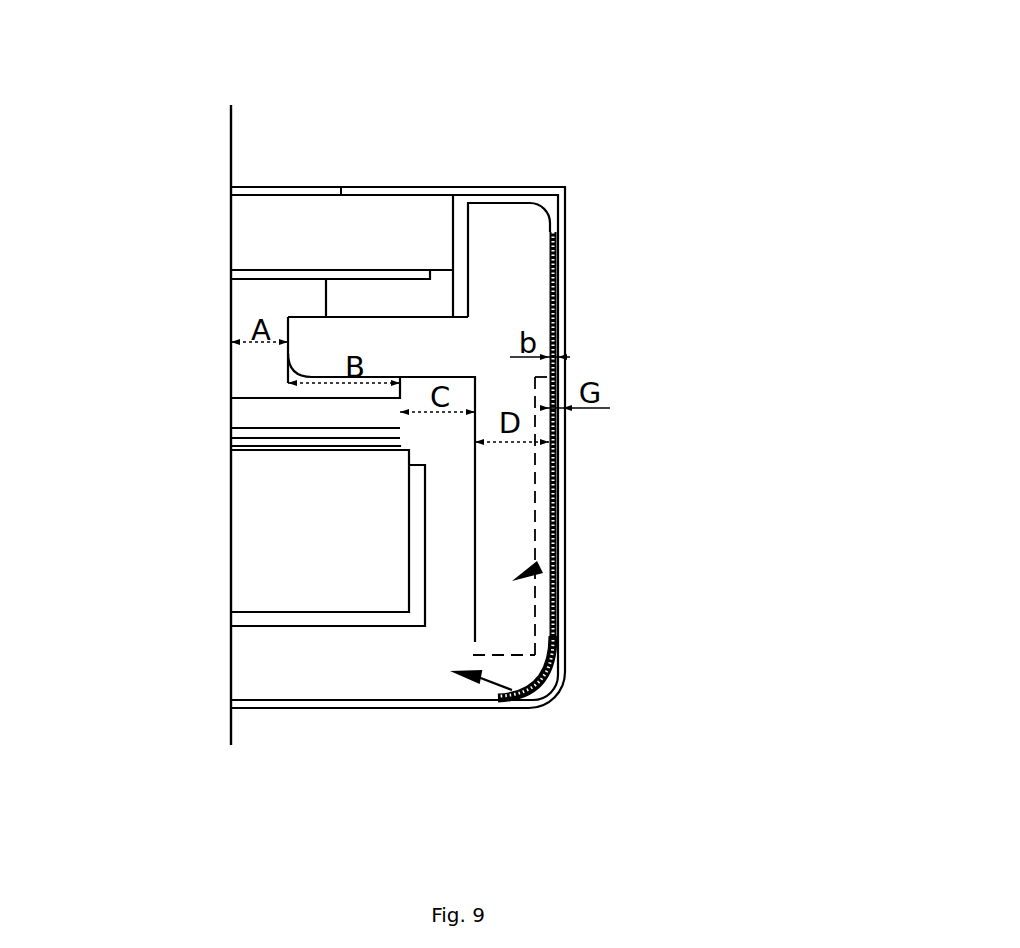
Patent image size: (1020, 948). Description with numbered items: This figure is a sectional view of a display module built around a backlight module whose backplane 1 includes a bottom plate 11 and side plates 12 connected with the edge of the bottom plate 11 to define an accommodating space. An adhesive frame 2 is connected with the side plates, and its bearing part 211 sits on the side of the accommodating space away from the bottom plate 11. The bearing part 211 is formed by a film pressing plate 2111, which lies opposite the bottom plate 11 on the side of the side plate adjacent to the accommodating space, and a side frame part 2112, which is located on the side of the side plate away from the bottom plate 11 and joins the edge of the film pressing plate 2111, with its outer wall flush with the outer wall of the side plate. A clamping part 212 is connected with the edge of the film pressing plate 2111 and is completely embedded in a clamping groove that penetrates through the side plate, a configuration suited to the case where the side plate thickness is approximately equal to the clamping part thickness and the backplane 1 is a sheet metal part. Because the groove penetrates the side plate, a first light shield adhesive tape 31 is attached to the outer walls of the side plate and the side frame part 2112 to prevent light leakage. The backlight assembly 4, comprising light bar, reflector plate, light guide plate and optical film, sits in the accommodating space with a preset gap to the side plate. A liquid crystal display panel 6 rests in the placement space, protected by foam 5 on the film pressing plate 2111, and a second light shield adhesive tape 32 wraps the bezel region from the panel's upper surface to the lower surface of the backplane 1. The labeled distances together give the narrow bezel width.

The backplane 1 is at (520, 695).
The bottom plate 11 is at (328, 680).
The side plate 12 is at (542, 487).
The adhesive frame 2 is at (543, 565).
The bearing part 211 is at (419, 174).
The film pressing plate 2111 is at (397, 338).
The side frame part 2112 is at (502, 297).
The clamping part 212 is at (500, 621).
The first light shield adhesive tape 31 is at (552, 240).
The second light shield adhesive tape 32 is at (565, 328).
The backlight assembly 4 is at (282, 535).
The foam 5 is at (342, 303).
The liquid crystal display panel 6 is at (353, 245).